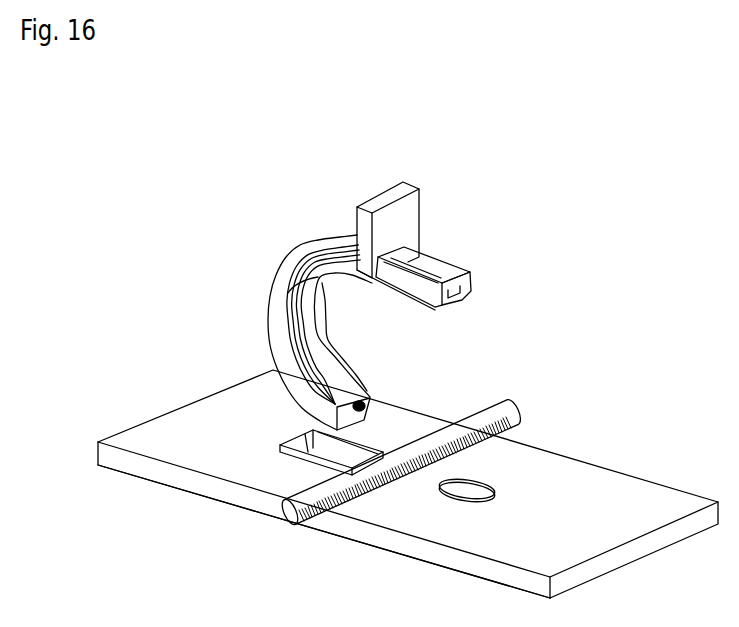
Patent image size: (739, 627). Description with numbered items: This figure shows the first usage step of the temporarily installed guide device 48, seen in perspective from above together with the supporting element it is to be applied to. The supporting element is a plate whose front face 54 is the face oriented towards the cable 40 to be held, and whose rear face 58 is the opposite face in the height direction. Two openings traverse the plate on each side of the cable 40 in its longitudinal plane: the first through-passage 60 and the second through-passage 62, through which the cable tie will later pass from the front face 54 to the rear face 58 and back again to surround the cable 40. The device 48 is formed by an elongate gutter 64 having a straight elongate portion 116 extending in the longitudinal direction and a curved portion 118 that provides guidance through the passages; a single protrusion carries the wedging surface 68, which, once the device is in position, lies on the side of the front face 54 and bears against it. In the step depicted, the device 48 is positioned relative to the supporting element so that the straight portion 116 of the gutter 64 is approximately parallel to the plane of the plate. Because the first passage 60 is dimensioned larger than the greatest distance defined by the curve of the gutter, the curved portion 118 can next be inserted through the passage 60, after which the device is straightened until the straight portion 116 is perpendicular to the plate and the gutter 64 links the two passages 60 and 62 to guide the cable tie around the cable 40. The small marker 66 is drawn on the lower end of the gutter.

The cable 40 is at (520, 412).
The guide device 48 is at (300, 270).
The front face 54 is at (150, 440).
The rear face 58 is at (214, 496).
The first through-passage 60 is at (322, 432).
The second through-passage 62 is at (500, 487).
The gutter 64 is at (297, 305).
The pin 66 is at (372, 403).
The wedging surface 68 is at (380, 192).
The straight elongate portion 116 is at (433, 264).
The curved portion 118 is at (282, 337).